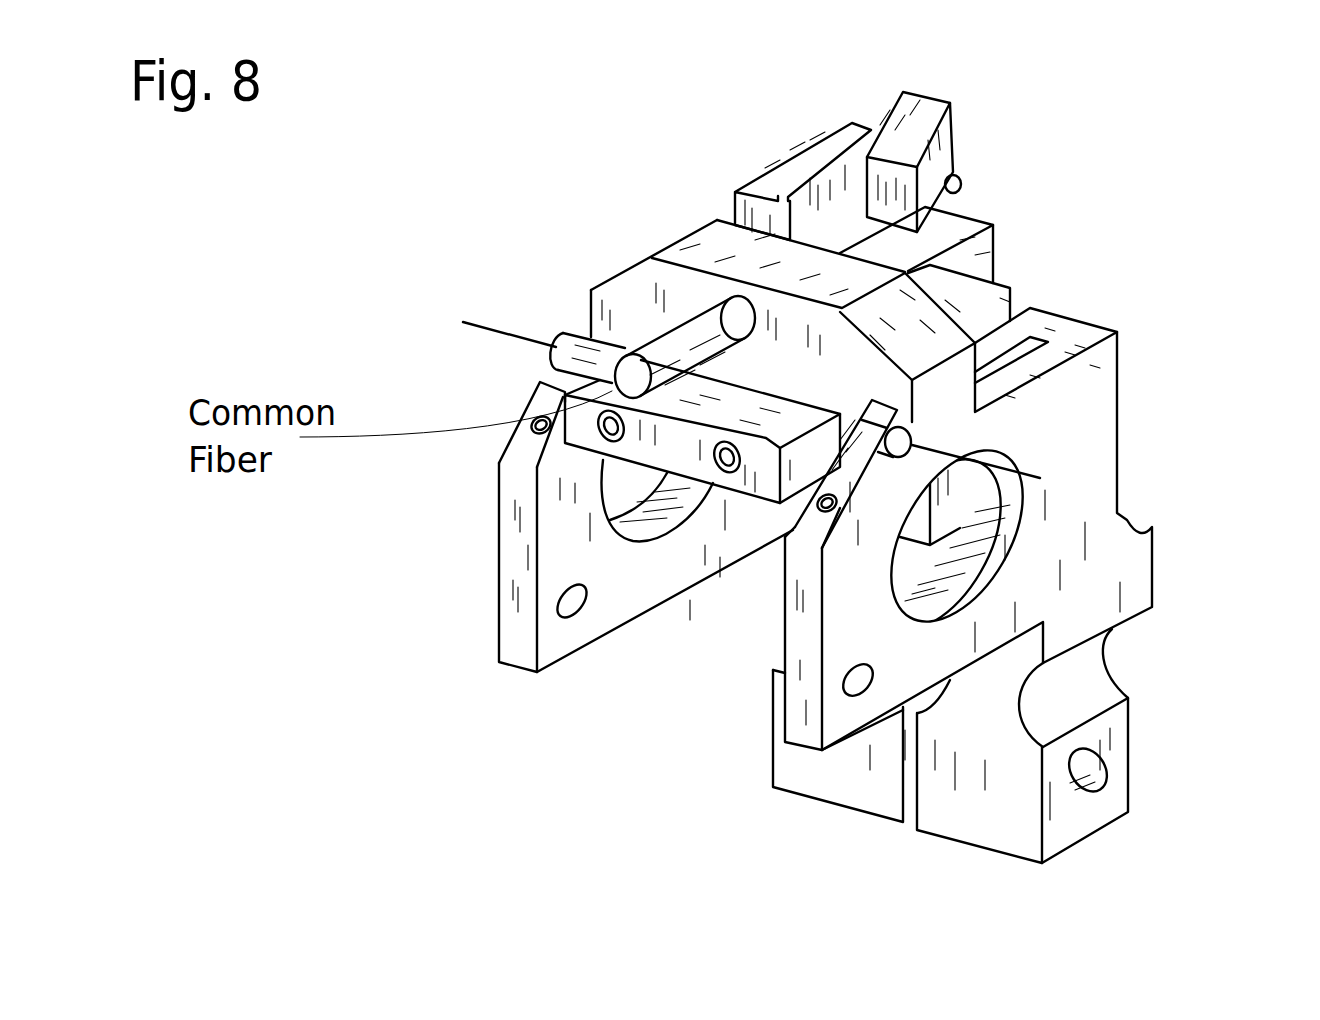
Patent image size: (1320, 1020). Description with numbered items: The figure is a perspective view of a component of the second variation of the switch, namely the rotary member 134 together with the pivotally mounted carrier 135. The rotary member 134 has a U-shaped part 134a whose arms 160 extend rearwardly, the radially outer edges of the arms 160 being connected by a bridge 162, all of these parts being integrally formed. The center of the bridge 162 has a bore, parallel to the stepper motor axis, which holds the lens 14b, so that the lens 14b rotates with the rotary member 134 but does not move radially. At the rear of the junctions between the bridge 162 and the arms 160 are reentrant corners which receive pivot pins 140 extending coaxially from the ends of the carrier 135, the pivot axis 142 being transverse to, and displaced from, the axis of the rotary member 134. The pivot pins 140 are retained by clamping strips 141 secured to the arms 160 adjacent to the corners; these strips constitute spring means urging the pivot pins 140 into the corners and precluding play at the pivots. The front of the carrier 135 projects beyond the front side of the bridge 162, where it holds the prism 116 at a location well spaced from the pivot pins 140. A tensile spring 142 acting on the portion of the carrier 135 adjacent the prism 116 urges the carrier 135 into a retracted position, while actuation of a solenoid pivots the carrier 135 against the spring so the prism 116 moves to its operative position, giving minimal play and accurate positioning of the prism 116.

The lens 14b is at (718, 320).
The carrier 135 is at (837, 123).
The prism 116 is at (958, 126).
The bridge 162 is at (637, 273).
The clamping strips 141 is at (888, 407).
The pivot axis / tensile spring 142 is at (490, 323).
The pivot pins 140 is at (578, 333).
The rotary member 134 is at (1130, 682).
The U-shaped part 134a is at (506, 621).
The arms 160 is at (793, 623).